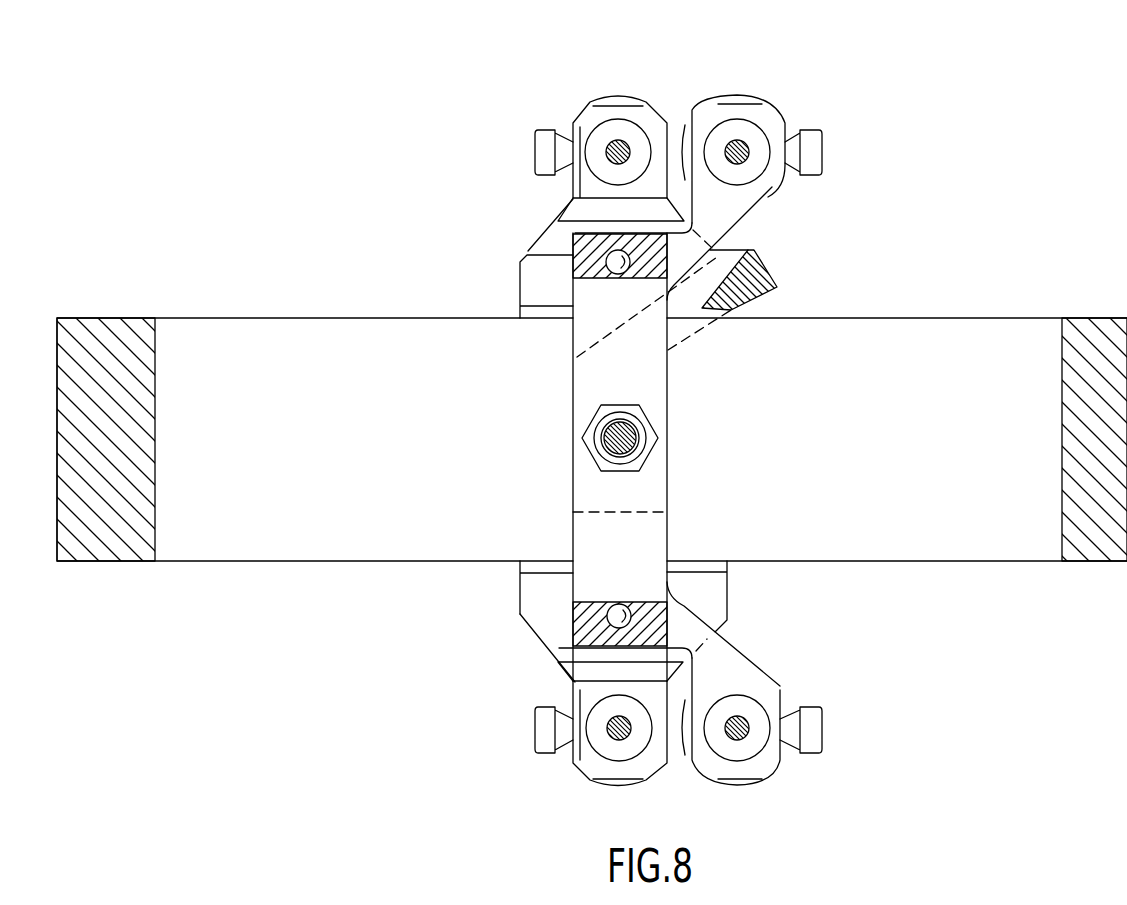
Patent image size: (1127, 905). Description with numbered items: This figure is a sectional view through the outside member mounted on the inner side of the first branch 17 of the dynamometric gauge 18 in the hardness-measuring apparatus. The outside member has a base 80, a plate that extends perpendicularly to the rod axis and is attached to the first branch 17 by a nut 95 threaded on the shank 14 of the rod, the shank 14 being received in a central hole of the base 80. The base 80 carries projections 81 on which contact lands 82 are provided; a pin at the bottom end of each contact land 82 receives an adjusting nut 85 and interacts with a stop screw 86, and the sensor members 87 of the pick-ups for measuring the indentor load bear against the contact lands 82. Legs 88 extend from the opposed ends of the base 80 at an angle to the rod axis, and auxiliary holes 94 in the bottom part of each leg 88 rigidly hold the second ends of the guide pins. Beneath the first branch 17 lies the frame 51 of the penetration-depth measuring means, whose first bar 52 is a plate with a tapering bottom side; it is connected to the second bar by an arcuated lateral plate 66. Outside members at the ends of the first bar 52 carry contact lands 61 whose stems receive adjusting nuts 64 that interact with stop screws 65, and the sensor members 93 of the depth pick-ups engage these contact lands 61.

The shank 14 is at (628, 430).
The first branch 17 is at (194, 336).
The dynamometric gauge 18 is at (104, 316).
The frame 51 is at (523, 247).
The first bar 52 is at (530, 243).
The contact lands 61 is at (612, 134).
The adjusting nuts 64 is at (677, 128).
The stop screws 65 is at (542, 129).
The arcuated lateral plate 66 is at (750, 280).
The base 80 is at (588, 537).
The projections 81 is at (717, 221).
The contact lands 82 is at (741, 131).
The adjusting nut 85 is at (788, 122).
The stop screw 86 is at (813, 146).
The sensor members 87 is at (731, 143).
The legs 88 is at (574, 256).
The sensor members 93 is at (624, 146).
The auxiliary holes 94 is at (607, 263).
The nut 95 is at (594, 443).